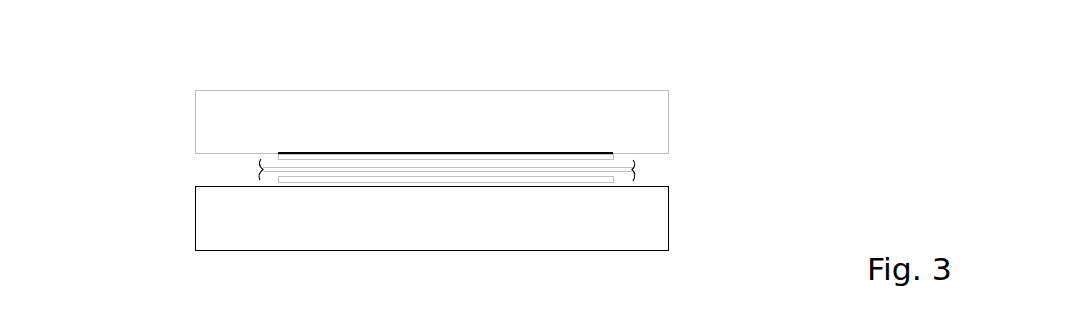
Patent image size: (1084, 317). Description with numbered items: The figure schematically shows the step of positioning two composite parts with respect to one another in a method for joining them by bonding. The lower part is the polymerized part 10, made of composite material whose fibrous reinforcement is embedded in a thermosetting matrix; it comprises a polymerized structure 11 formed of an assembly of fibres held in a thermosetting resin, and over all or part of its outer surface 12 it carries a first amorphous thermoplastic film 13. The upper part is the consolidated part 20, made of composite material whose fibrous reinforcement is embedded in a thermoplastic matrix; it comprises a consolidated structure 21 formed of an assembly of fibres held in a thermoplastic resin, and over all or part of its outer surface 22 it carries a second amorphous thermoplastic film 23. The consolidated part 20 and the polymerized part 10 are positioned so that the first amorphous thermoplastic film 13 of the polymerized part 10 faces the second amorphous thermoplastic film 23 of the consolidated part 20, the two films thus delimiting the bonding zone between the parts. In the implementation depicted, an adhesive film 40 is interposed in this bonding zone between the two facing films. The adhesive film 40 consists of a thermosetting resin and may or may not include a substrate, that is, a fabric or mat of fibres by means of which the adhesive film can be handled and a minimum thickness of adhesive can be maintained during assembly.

The polymerized part 10 is at (367, 224).
The polymerized structure 11 is at (432, 240).
The outer surface 12 is at (387, 177).
The first amorphous thermoplastic film 13 is at (446, 237).
The consolidated part 20 is at (367, 118).
The consolidated structure 21 is at (432, 100).
The outer surface 22 is at (476, 160).
The second amorphous thermoplastic film 23 is at (446, 103).
The adhesive film 40 is at (477, 234).